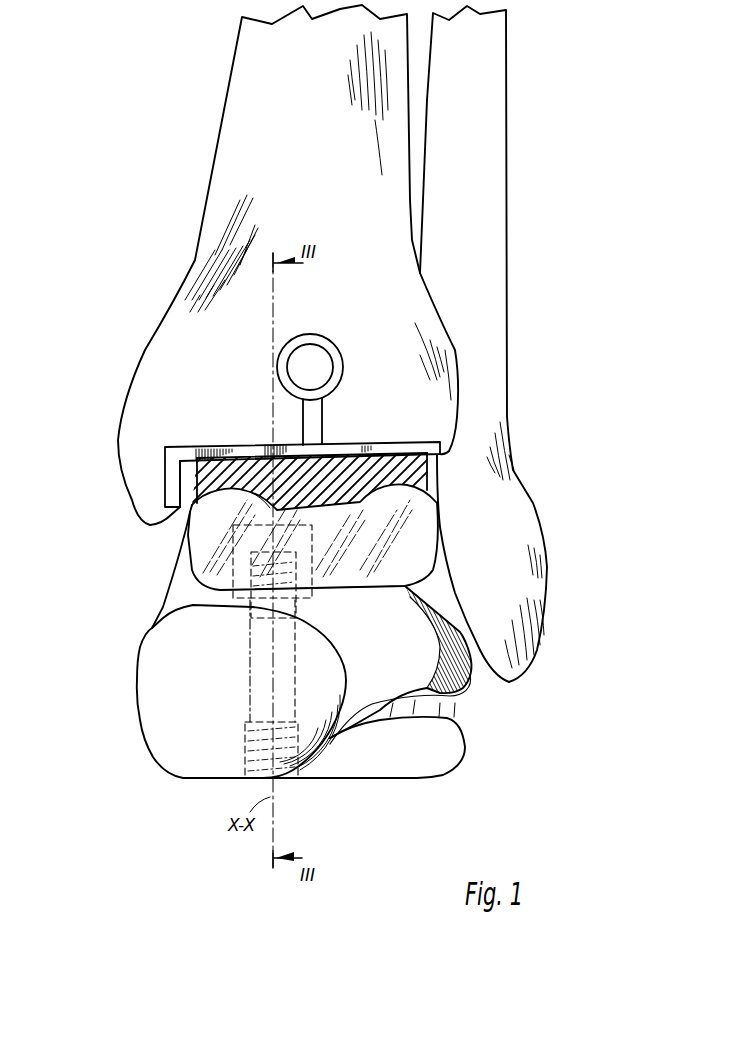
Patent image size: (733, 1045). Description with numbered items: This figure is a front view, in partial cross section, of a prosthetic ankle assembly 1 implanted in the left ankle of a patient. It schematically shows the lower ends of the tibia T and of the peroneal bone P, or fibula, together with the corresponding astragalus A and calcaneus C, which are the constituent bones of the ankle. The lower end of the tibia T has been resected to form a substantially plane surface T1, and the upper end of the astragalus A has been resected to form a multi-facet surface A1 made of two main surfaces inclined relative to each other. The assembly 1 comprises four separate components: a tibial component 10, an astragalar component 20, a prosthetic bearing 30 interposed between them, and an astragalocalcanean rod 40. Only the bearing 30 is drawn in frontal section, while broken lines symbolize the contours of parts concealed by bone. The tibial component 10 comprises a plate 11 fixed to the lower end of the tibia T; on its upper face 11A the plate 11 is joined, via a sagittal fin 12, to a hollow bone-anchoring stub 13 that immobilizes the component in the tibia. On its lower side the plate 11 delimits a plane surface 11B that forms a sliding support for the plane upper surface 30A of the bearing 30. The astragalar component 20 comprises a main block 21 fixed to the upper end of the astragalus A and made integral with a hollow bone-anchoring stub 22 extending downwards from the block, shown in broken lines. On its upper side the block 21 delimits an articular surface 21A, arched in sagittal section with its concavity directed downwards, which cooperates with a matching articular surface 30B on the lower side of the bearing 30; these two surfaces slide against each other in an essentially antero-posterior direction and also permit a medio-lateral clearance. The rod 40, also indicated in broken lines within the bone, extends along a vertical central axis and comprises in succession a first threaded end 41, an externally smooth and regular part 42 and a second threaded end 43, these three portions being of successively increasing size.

The prosthetic ankle assembly 1 is at (307, 372).
The tibial component 10 is at (305, 431).
The plate 11 is at (305, 431).
The upper face 11A is at (210, 444).
The plane surface 11B is at (187, 469).
The sagittal fin 12 is at (318, 423).
The hollow bone-anchoring stub 13 is at (318, 338).
The astragalar component 20 is at (335, 494).
The main block 21 is at (403, 548).
The articular surface 21A is at (262, 445).
The hollow bone-anchoring stub 22 is at (233, 578).
The prosthetic bearing 30 is at (374, 438).
The plane upper surface 30A is at (379, 449).
The articular surface 30B is at (368, 503).
The astragalocalcanean rod 40 is at (163, 689).
The first threaded end 41 is at (258, 603).
The externally smooth and regular part 42 is at (257, 657).
The second threaded end 43 is at (243, 737).
The astragalus A is at (170, 752).
The multi-facet surface A1 is at (341, 579).
The calcaneus C is at (435, 753).
The peroneal bone P is at (493, 103).
The tibia T is at (262, 57).
The plane surface T1 is at (513, 465).